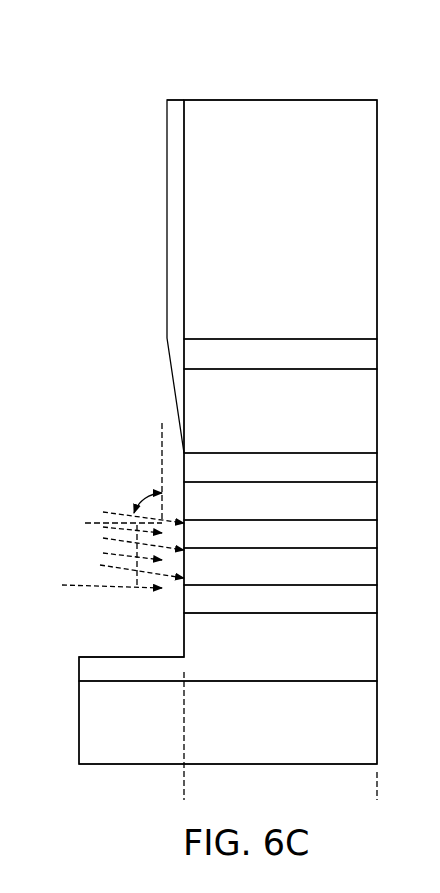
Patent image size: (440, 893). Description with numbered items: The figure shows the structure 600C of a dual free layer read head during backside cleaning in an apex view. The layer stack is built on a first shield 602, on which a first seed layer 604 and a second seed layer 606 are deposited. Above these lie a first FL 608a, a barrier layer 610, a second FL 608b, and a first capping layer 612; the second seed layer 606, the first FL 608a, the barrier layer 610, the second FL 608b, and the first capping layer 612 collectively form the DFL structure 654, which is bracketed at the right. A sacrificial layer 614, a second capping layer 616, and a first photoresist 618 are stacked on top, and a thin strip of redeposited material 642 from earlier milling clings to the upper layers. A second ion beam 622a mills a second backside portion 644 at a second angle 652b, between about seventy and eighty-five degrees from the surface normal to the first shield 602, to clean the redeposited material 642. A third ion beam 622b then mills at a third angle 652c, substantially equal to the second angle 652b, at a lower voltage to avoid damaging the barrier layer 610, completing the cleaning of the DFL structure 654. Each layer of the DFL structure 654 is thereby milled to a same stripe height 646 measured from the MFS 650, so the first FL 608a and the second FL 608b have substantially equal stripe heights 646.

The structure 600C is at (302, 68).
The first shield 602 is at (363, 737).
The first seed layer 604 is at (363, 658).
The second seed layer 606 is at (280, 599).
The first FL 608a is at (370, 577).
The second FL 608b is at (370, 511).
The barrier layer 610 is at (363, 544).
The first capping layer 612 is at (363, 477).
The sacrificial layer 614 is at (363, 422).
The second capping layer 616 is at (363, 364).
The first photoresist 618 is at (363, 230).
The second ion beam 622a is at (110, 512).
The third ion beam 622b is at (102, 548).
The redeposited material 642 is at (173, 148).
The second backside portion 644 is at (185, 93).
The stripe height 646 is at (376, 792).
The MFS 650 is at (311, 496).
The second angle 652b is at (134, 488).
The third angle 652c is at (137, 554).
The DFL structure 654 is at (308, 533).